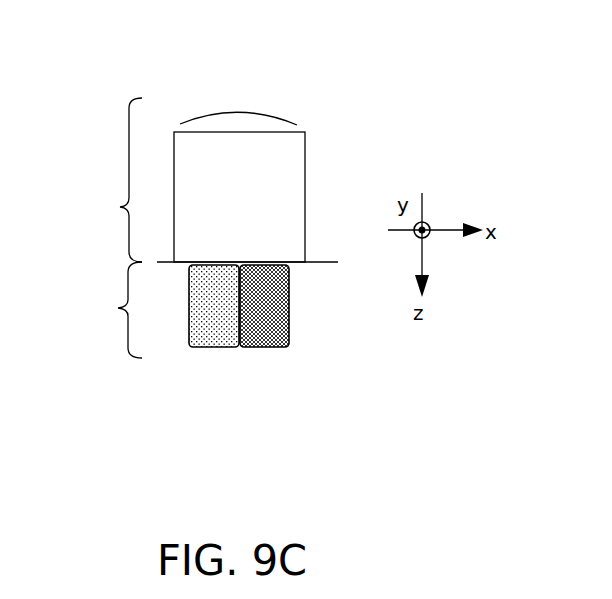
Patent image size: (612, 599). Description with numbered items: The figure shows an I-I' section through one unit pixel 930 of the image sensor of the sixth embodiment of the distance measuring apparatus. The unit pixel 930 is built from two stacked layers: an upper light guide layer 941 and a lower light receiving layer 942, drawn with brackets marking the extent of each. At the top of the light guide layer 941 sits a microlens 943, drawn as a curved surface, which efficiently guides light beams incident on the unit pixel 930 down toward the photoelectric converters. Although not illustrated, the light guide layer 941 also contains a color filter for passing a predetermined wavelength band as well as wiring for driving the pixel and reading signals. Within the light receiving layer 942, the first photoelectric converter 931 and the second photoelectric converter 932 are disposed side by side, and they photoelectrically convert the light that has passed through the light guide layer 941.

The unit pixel 930 is at (280, 132).
The first photoelectric converter 931 is at (208, 315).
The second photoelectric converter 932 is at (272, 315).
The light guide layer 941 is at (98, 180).
The light receiving layer 942 is at (97, 310).
The microlens 943 is at (277, 114).